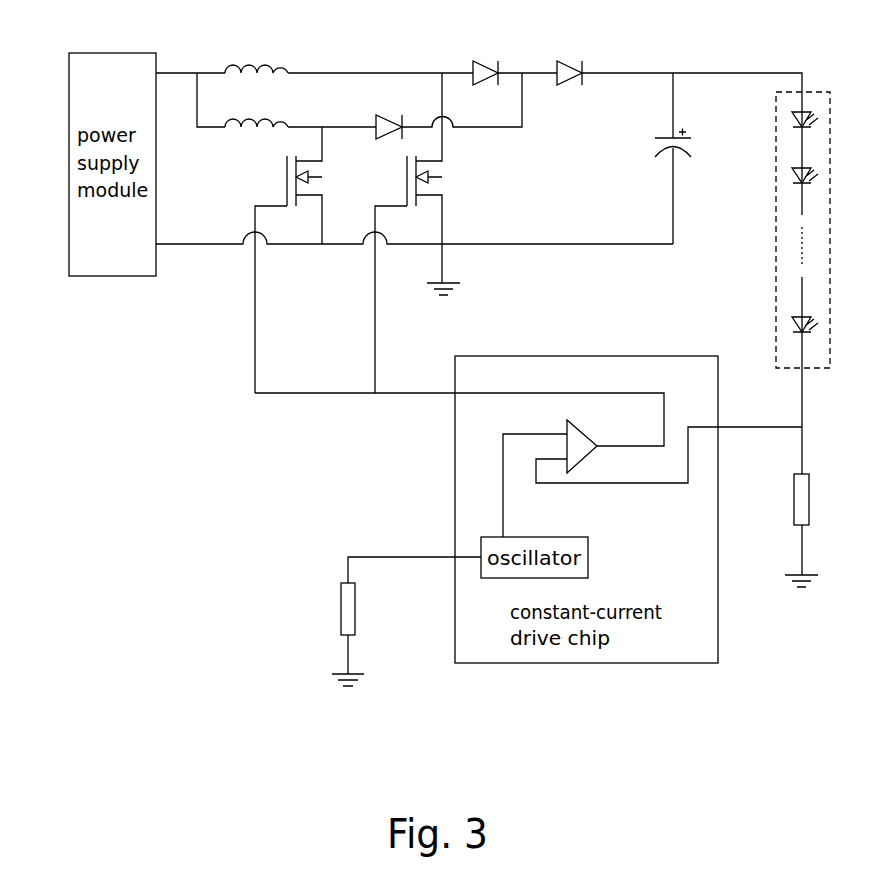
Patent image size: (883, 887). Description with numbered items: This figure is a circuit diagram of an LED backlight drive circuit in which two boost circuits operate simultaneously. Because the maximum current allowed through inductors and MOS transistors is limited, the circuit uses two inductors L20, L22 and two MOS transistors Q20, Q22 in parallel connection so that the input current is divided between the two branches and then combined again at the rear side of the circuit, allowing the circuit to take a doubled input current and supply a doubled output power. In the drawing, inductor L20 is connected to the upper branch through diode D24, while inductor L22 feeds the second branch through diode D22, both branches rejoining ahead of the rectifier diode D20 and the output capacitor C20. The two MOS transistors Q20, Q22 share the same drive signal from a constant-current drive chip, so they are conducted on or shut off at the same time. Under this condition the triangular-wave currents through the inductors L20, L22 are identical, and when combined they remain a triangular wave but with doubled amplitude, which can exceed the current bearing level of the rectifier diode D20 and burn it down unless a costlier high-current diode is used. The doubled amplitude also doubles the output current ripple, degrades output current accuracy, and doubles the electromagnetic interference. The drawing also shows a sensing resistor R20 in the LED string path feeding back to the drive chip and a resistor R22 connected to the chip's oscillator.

The inductor L20 is at (256, 52).
The inductor L22 is at (256, 107).
The rectifier diode D20 is at (578, 56).
The second diode D22 is at (397, 113).
The first diode D24 is at (494, 56).
The output capacitor C20 is at (644, 158).
The MOS transistor Q20 is at (409, 233).
The MOS transistor Q22 is at (284, 260).
The current sensing resistor R20 is at (822, 530).
The oscillator frequency setting resistor R22 is at (406, 621).